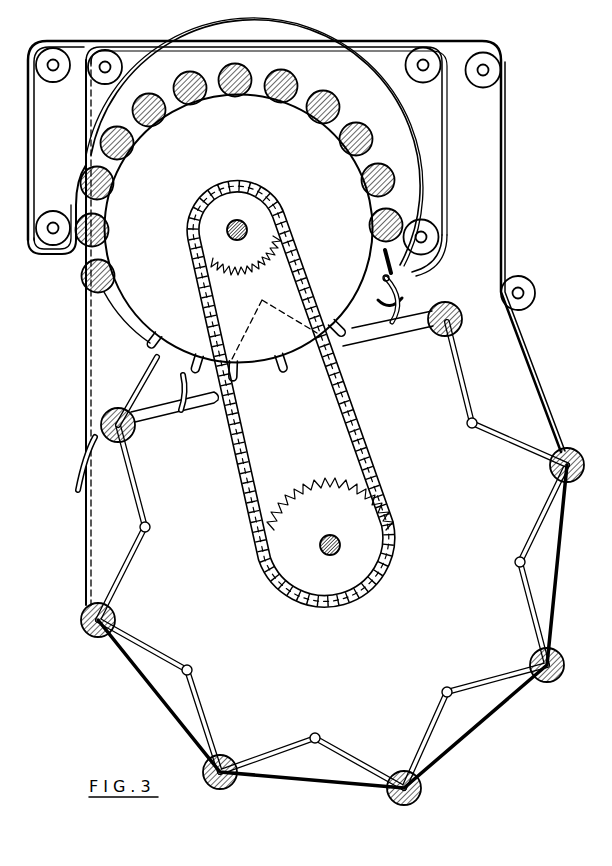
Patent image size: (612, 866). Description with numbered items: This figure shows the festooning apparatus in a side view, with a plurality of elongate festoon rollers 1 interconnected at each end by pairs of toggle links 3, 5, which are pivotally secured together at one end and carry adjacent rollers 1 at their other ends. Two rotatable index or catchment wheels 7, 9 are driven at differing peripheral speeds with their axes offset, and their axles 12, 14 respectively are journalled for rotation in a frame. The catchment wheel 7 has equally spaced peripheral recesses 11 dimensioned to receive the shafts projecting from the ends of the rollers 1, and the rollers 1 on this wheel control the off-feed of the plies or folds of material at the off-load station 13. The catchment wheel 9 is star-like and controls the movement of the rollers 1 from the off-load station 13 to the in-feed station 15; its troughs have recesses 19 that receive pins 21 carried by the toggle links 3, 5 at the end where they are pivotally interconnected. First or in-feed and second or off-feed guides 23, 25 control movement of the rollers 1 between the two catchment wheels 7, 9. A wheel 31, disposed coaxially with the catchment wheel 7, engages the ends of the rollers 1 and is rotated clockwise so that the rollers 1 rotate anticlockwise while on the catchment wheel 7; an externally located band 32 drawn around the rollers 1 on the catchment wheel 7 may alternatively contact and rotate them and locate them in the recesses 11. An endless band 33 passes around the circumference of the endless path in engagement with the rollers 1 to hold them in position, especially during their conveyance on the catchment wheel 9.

The festoon roller 1 is at (362, 133).
The toggle link 3 is at (508, 436).
The toggle link 5 is at (465, 400).
The catchment wheel 7 is at (138, 334).
The catchment wheel 9 is at (208, 593).
The peripheral recess 11 is at (150, 338).
The axle 12 is at (233, 226).
The off-load station 13 is at (114, 383).
The axle 14 is at (338, 555).
The in-feed station 15 is at (396, 284).
The recess 19 is at (217, 398).
The pin 21 is at (472, 430).
The in-feed guide 23 is at (394, 264).
The off-feed guide 25 is at (82, 472).
The wheel 31 is at (244, 137).
The outer race band 32 is at (272, 57).
The endless band 33 is at (140, 688).